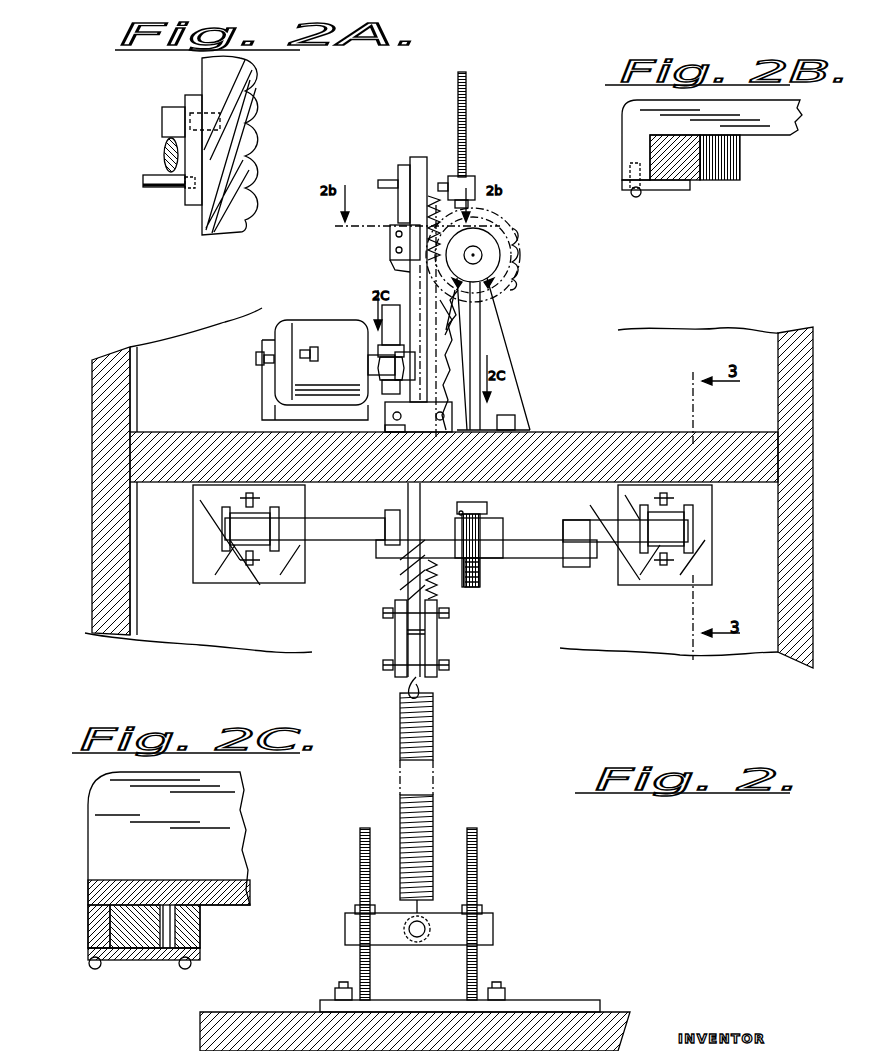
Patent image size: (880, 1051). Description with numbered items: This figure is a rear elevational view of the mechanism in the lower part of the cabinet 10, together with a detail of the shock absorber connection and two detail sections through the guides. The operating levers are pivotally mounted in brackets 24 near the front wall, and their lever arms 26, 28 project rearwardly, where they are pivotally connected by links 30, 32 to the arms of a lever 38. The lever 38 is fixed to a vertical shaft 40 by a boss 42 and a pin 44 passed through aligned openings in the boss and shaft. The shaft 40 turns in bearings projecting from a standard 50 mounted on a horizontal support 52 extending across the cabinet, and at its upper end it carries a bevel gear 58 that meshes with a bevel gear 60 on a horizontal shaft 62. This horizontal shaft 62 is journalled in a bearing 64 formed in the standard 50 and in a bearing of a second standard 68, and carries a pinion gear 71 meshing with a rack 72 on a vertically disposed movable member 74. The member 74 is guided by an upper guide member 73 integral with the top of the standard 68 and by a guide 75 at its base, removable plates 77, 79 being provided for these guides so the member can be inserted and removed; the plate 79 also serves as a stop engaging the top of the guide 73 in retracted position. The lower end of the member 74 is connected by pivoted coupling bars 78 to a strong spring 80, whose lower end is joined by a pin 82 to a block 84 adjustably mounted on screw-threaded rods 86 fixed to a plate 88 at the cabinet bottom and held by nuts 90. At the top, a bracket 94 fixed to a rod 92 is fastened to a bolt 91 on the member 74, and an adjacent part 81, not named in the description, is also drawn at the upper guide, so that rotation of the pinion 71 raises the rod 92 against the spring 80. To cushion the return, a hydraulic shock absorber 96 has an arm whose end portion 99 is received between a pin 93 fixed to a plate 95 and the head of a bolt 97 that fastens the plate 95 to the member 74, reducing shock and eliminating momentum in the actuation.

In FIG. 2, the cabinet 10 is at (796, 334).
In FIG. 2, the brackets 24 is at (270, 512).
In FIG. 2, the lever arm 26 is at (600, 527).
In FIG. 2, the lever arm 28 is at (318, 541).
In FIG. 2, the link 30 is at (542, 558).
In FIG. 2, the link 32 is at (406, 552).
In FIG. 2, the lever 38 is at (504, 526).
In FIG. 2, the vertical shaft 40 is at (480, 583).
In FIG. 2, the boss 42 is at (482, 506).
In FIG. 2, the pin 44 is at (458, 513).
In FIG. 2, the standard 50 is at (500, 324).
In FIG. 2, the horizontal support 52 is at (614, 440).
In FIG. 2, the bevel gear 58 is at (496, 286).
In FIG. 2, the bevel gear 60 is at (505, 270).
In FIG. 2, the horizontal shaft 62 is at (483, 254).
In FIG. 2, the bearing 64 is at (500, 244).
In FIG. 2, the standard 68 is at (400, 263).
In FIG. 2B, the pinion gear 71 is at (735, 157).
In FIG. 2, the pinion gear 71 is at (513, 233).
In FIG. 2A, the rack 72 is at (246, 124).
In FIG. 2B, the rack 72 is at (722, 178).
In FIG. 2, the rack 72 is at (437, 585).
In FIG. 2B, the upper guide member 73 is at (630, 139).
In FIG. 2, the upper guide member 73 is at (391, 238).
In FIG. 2A, the movable member 74 is at (212, 76).
In FIG. 2B, the movable member 74 is at (682, 172).
In FIG. 2C, the movable member 74 is at (120, 960).
In FIG. 2, the movable member 74 is at (403, 589).
In FIG. 2C, the guide 75 is at (88, 922).
In FIG. 2, the guide 75 is at (452, 424).
In FIG. 2B, the removable plate 77 is at (658, 191).
In FIG. 2, the pivoted coupling bars 78 is at (395, 645).
In FIG. 2C, the removable plate 79 is at (150, 960).
In FIG. 2, the removable plate 79 is at (385, 428).
In FIG. 2, the spring 80 is at (434, 734).
In FIG. 2, the block 81 is at (398, 208).
In FIG. 2, the pin 82 is at (418, 942).
In FIG. 2, the block 84 is at (493, 936).
In FIG. 2, the screw-threaded rods 86 is at (360, 855).
In FIG. 2, the plate 88 is at (505, 1002).
In FIG. 2, the nuts 90 is at (355, 910).
In FIG. 2, the bolt 91 is at (441, 192).
In FIG. 2, the rod 92 is at (466, 98).
In FIG. 2A, the pin 93 is at (153, 188).
In FIG. 2, the bracket 94 is at (476, 186).
In FIG. 2A, the plate 95 is at (190, 206).
In FIG. 2, the hydraulic shock absorber 96 is at (330, 330).
In FIG. 2A, the bolt 97 is at (162, 119).
In FIG. 2A, the end portion of shock absorber arm 99 is at (164, 156).